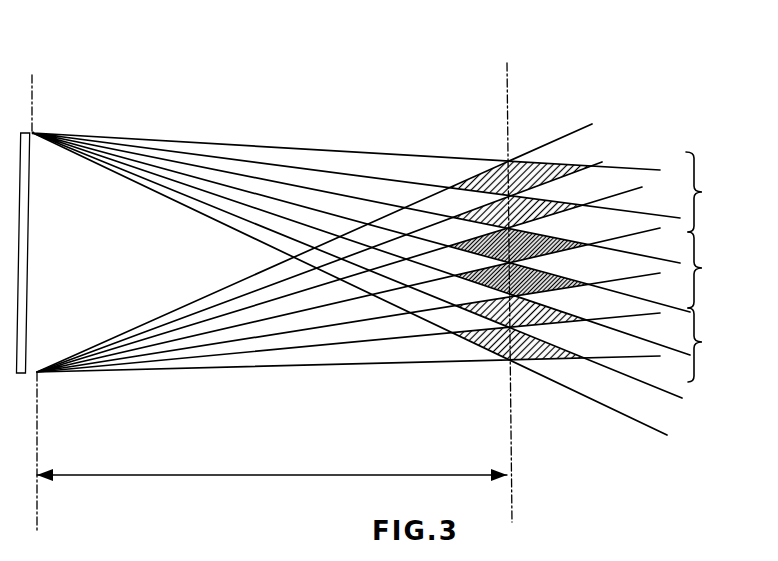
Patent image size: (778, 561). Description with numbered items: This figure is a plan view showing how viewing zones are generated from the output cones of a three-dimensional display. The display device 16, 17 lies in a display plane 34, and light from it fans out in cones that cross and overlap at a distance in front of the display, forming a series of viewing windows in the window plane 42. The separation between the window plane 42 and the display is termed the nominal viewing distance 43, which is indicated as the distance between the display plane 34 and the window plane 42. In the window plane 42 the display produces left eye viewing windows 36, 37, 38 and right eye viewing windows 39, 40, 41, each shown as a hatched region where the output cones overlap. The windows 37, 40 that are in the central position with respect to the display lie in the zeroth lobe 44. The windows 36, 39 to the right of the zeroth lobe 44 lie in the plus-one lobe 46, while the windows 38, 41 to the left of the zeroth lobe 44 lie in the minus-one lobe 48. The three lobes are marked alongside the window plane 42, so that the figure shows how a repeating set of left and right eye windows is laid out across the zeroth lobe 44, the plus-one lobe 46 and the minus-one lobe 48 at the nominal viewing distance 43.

The display plane 34 is at (32, 76).
The display device 16 is at (163, 77).
The display device 17 is at (33, 131).
The left eye viewing window 36 is at (330, 262).
The left eye viewing window 37 is at (385, 317).
The left eye viewing window 38 is at (470, 337).
The right eye viewing window 39 is at (540, 172).
The right eye viewing window 40 is at (545, 250).
The right eye viewing window 41 is at (535, 322).
The window plane 42 is at (507, 64).
The nominal viewing distance 43 is at (272, 491).
The zeroth lobe 44 is at (716, 270).
The +1 lobe 46 is at (715, 192).
The −1 lobe 48 is at (716, 345).